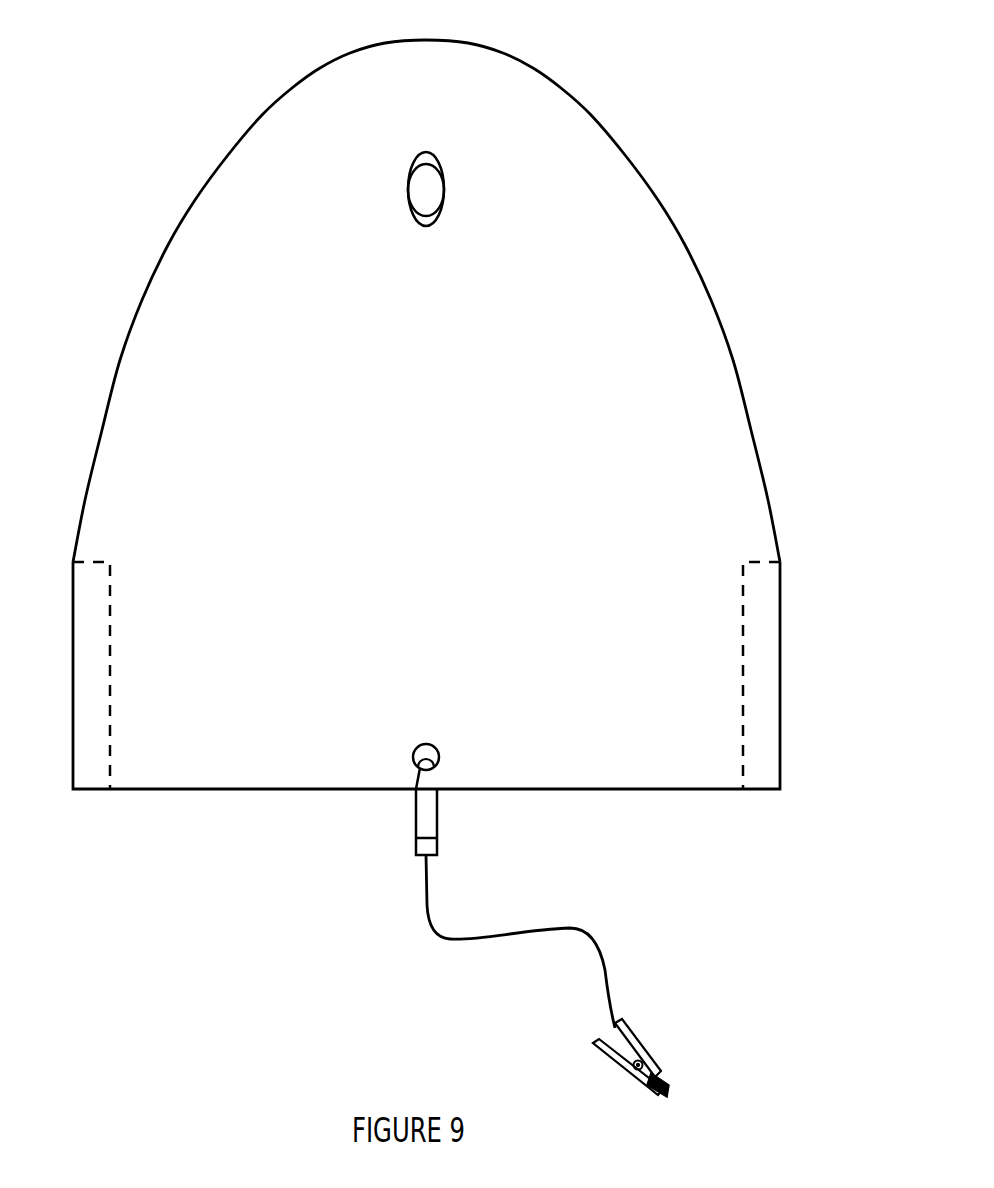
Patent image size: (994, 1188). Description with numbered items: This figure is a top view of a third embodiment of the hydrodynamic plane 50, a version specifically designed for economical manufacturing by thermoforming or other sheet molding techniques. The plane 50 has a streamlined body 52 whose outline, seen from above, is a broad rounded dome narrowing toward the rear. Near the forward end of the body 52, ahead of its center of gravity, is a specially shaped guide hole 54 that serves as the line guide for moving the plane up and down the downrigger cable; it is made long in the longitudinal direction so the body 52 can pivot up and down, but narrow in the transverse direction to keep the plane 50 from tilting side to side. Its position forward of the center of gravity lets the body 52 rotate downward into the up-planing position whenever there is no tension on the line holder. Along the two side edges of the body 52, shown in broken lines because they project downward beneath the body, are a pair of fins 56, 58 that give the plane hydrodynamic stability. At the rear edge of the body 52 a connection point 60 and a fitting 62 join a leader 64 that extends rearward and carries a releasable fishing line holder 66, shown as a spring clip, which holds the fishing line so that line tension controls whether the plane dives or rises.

The hydrodynamic plane 50 is at (426, 404).
The streamlined body 52 is at (650, 257).
The guide hole 54 is at (442, 195).
The fin 56 is at (110, 658).
The fin 58 is at (772, 660).
The snap fastener 60 is at (432, 750).
The connector 62 is at (437, 838).
The leader 64 is at (450, 940).
The fishing line holder 66 is at (642, 1050).